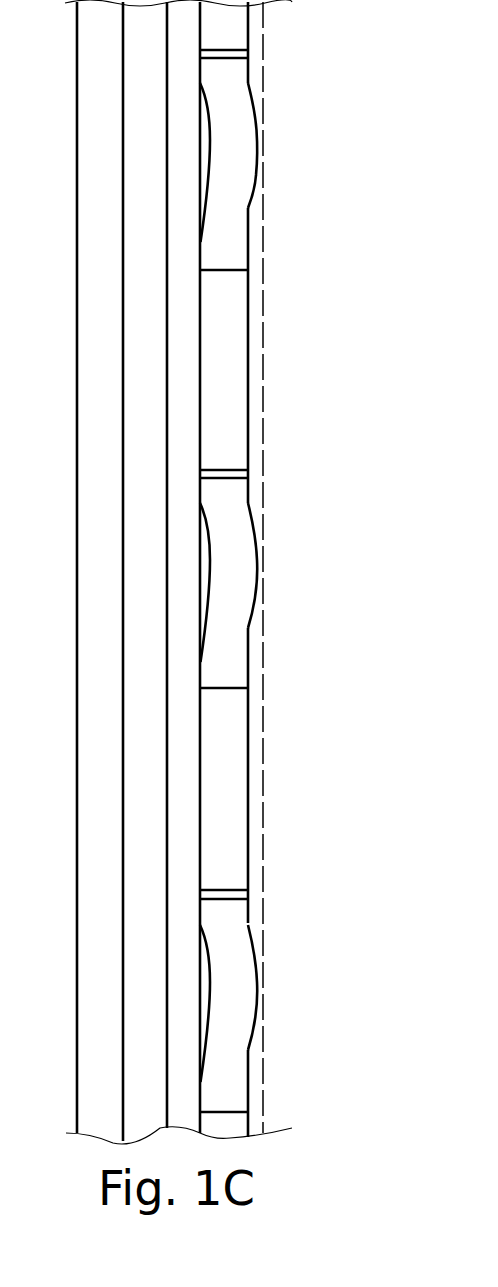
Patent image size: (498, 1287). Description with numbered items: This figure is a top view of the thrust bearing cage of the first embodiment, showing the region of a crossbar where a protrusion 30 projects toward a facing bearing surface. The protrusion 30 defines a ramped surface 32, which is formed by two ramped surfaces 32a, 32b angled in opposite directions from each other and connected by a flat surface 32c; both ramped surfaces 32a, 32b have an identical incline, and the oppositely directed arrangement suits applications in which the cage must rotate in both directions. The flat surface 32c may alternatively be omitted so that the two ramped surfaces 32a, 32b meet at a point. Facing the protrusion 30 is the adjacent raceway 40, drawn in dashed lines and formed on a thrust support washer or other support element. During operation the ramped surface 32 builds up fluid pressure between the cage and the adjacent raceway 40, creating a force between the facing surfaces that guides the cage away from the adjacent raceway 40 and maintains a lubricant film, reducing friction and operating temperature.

The protrusion 30 is at (233, 75).
The ramped surface 32 is at (296, 582).
The ramped surface 32a is at (250, 97).
The ramped surface 32b is at (258, 185).
The flat surface 32c is at (258, 145).
The adjacent raceway 40 is at (262, 457).